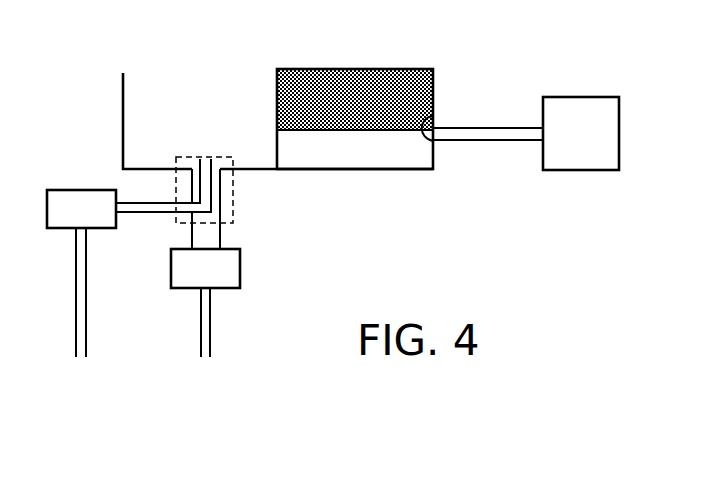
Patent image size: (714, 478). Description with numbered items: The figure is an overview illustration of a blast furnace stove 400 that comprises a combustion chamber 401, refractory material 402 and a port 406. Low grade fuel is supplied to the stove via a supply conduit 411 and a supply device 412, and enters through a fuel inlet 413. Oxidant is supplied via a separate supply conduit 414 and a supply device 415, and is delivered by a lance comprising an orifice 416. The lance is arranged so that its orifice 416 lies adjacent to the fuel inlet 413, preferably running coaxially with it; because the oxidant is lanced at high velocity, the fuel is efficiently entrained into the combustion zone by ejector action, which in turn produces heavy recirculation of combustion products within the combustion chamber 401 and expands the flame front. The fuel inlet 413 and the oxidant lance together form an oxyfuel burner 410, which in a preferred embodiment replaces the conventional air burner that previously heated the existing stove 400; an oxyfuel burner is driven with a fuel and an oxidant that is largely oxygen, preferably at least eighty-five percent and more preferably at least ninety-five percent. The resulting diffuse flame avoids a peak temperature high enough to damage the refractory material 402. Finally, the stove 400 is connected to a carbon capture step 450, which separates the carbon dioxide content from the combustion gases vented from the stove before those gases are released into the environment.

The blast furnace stove 400 is at (527, 235).
The combustion chamber 401 is at (156, 88).
The refractory material 402 is at (362, 69).
The port 406 is at (428, 118).
The carbon capture step 450 is at (583, 97).
The oxyfuel burner 410 is at (176, 224).
The supply conduit 411 is at (211, 323).
The supply device 412 is at (241, 267).
The fuel inlet 413 is at (195, 160).
The supply conduit 414 is at (76, 318).
The supply device 415 is at (82, 190).
The orifice 416 is at (207, 161).